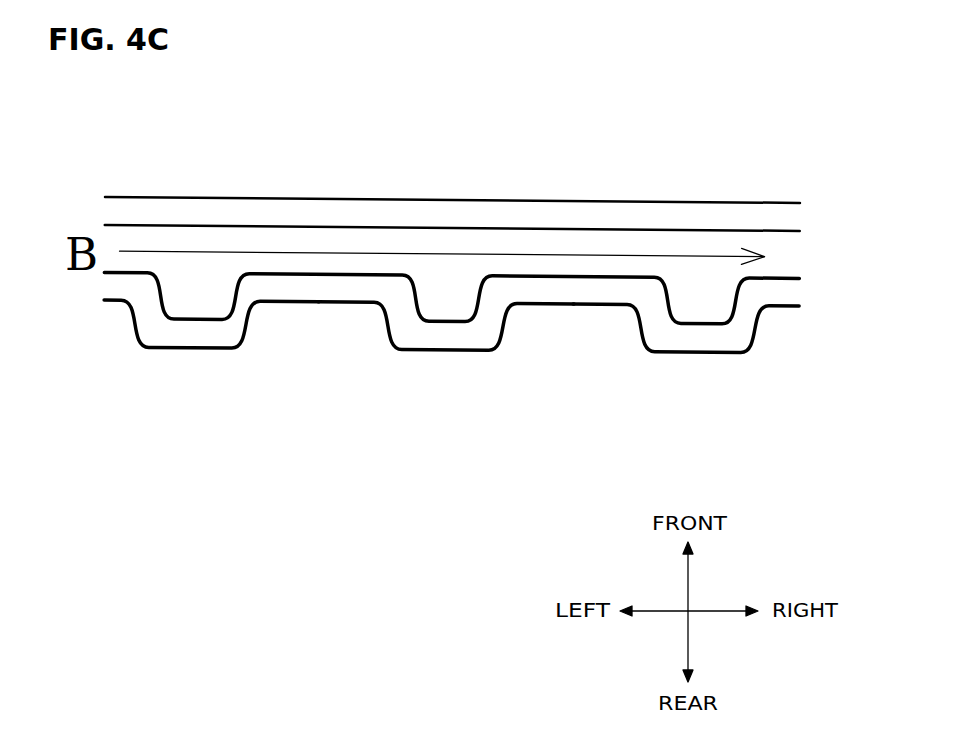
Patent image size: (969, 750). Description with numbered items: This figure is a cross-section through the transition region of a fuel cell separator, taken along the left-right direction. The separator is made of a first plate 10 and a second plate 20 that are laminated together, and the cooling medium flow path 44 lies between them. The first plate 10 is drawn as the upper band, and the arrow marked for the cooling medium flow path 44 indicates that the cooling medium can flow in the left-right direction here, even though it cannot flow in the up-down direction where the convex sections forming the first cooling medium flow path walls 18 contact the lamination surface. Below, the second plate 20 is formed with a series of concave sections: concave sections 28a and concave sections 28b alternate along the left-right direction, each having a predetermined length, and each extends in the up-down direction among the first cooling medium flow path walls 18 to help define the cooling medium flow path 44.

The first plate 10 is at (728, 223).
The first cooling medium flow path walls 18 is at (608, 232).
The second plate 20 is at (740, 300).
The concave sections 28a is at (202, 332).
The concave sections 28b is at (447, 333).
The cooling medium flow path 44 is at (203, 265).